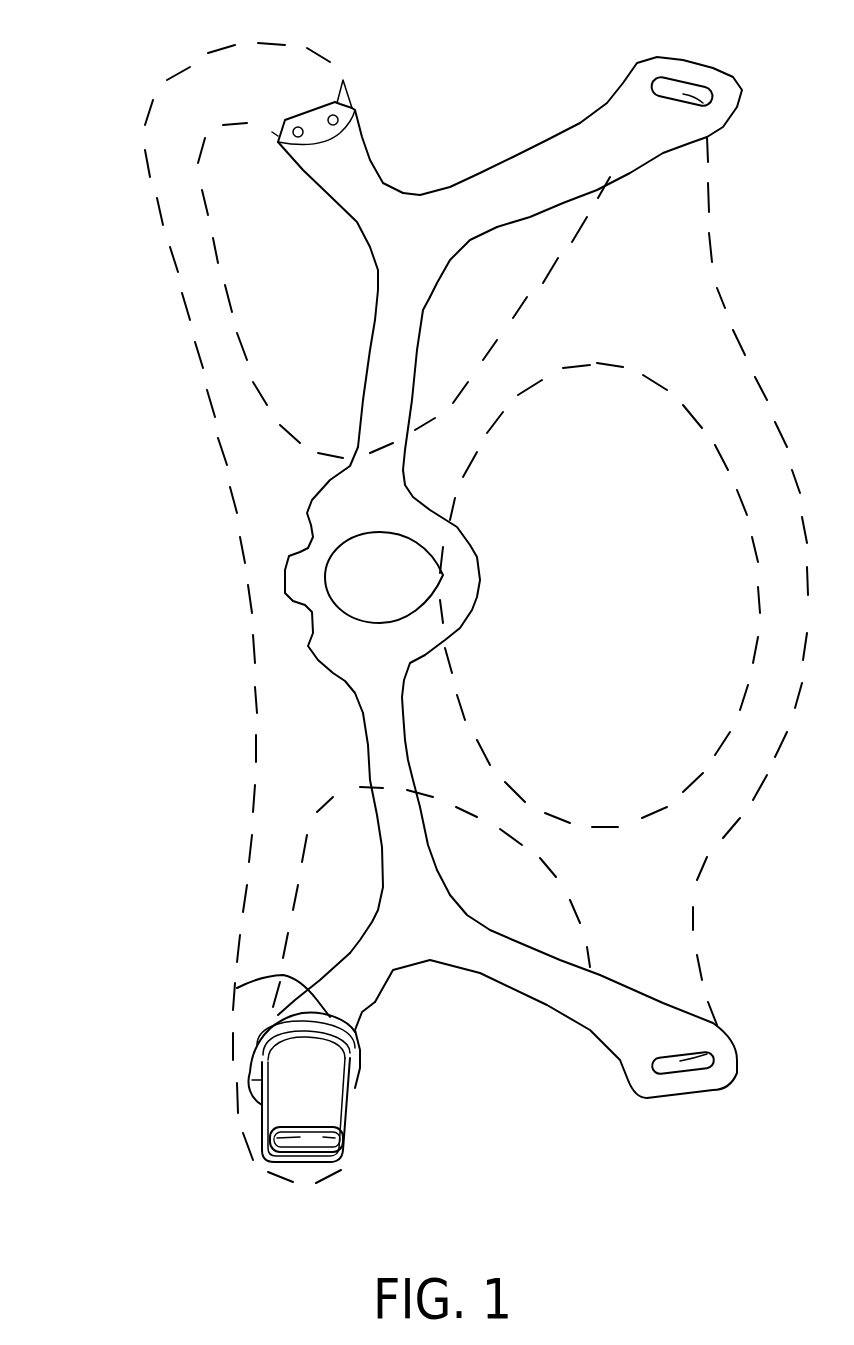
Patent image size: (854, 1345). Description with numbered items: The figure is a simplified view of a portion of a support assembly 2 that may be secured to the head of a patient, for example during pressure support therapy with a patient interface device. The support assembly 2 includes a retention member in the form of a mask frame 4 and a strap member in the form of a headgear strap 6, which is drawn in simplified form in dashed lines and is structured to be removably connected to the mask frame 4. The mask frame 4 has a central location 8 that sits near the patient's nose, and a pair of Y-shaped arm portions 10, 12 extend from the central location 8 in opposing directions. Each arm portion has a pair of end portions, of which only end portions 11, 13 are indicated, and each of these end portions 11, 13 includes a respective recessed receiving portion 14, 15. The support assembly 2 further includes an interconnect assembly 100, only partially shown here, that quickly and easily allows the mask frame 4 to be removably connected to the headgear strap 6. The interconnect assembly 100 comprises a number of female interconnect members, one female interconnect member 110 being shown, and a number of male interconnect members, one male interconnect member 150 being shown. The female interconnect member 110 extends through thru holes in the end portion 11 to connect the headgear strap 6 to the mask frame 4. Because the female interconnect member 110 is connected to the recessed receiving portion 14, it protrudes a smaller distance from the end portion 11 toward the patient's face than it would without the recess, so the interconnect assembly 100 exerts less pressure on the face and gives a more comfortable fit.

The support assembly 2 is at (163, 658).
The mask frame 4 is at (544, 1021).
The headgear strap 6 is at (252, 843).
The central location 8 is at (467, 573).
The arm portion 10 is at (370, 858).
The end portion 11 is at (237, 988).
The arm portion 12 is at (338, 272).
The end portion 13 is at (337, 150).
The recessed receiving portion 14 is at (353, 1013).
The recessed receiving portion 15 is at (315, 128).
The interconnect assembly 100 is at (262, 1118).
The female interconnect member 110 is at (372, 1067).
The male interconnect member 150 is at (366, 1165).